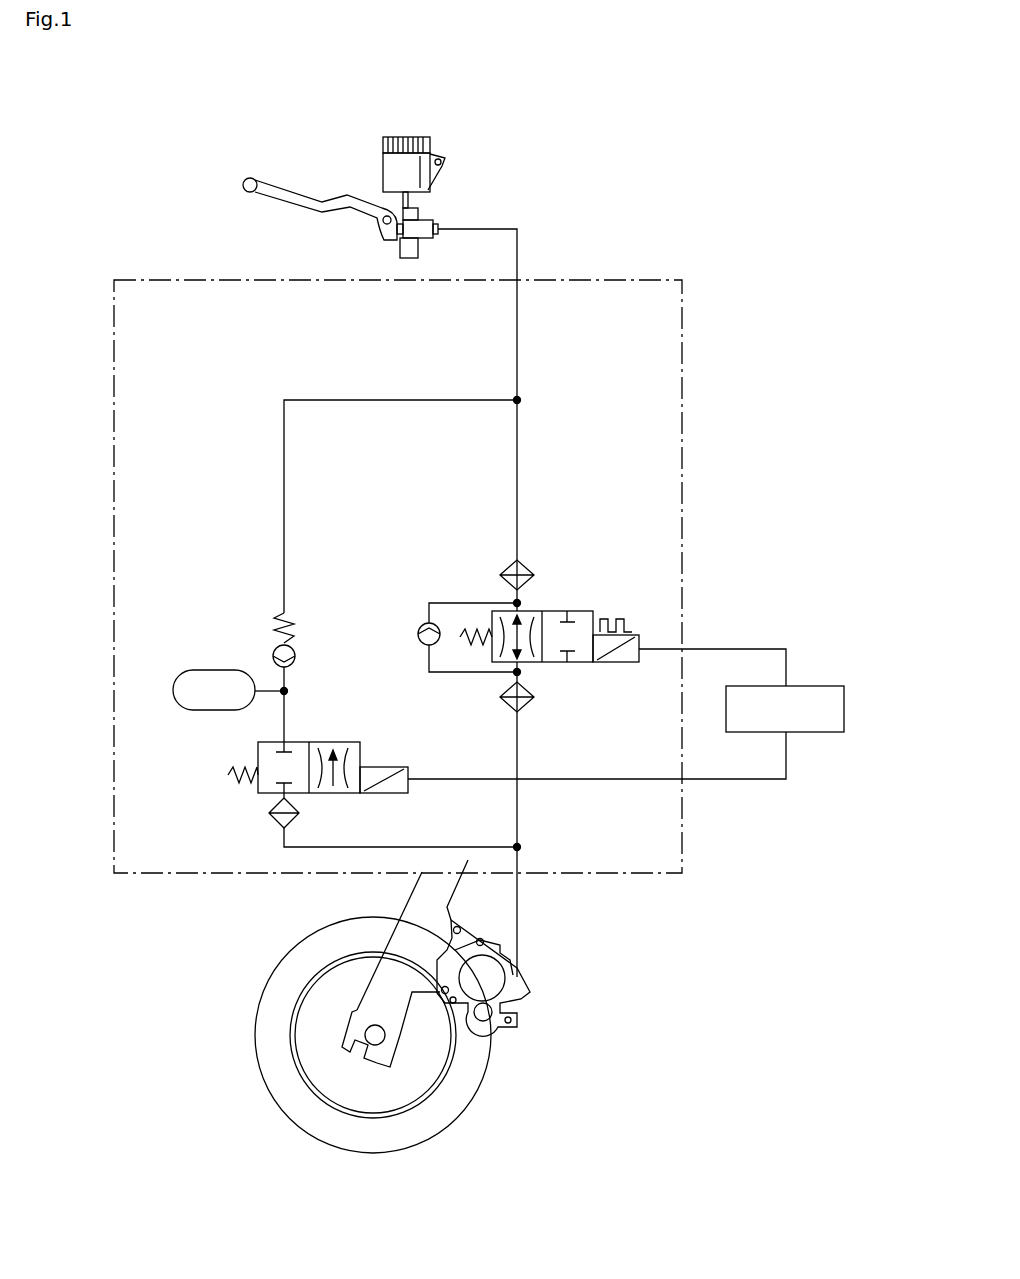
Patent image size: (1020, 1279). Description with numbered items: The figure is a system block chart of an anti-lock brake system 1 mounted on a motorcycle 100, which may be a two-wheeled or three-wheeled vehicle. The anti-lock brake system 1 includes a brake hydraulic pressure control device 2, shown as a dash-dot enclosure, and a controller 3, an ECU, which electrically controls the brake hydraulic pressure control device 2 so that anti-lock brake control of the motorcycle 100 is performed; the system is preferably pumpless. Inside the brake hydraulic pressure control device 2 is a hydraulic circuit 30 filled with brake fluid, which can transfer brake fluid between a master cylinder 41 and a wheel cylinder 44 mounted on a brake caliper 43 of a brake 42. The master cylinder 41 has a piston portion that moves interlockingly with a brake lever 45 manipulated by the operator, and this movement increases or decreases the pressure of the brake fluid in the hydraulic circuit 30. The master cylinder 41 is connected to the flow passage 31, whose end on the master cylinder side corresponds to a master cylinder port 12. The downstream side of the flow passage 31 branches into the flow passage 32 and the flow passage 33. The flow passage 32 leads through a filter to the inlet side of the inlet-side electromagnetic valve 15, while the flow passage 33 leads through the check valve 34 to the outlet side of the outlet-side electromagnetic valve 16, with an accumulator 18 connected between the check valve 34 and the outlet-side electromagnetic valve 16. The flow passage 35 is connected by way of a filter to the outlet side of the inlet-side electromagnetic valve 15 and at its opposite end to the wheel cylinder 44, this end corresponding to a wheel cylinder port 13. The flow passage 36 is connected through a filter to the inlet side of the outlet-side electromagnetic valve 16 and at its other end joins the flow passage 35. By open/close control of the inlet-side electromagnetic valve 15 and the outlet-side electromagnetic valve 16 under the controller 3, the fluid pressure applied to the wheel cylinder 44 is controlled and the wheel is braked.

The motorcycle 100 is at (768, 107).
The anti-lock brake system 1 is at (636, 196).
The brake hydraulic pressure control device 2 is at (687, 346).
The controller 3 is at (815, 734).
The master cylinder port 12 is at (517, 280).
The wheel cylinder port 13 is at (517, 878).
The inlet-side electromagnetic valve 15 is at (593, 662).
The outlet-side electromagnetic valve 16 is at (268, 787).
The accumulator 18 is at (212, 670).
The hydraulic circuit 30 is at (651, 469).
The flow passage 31 is at (517, 340).
The flow passage 32 is at (517, 505).
The flow passage 33 is at (400, 400).
The check valve 34 is at (296, 630).
The flow passage 35 is at (517, 813).
The flow passage 36 is at (452, 846).
The master cylinder 41 is at (420, 222).
The brake 42 is at (484, 1034).
The brake caliper 43 is at (531, 985).
The wheel cylinder 44 is at (493, 990).
The brake lever 45 is at (300, 195).